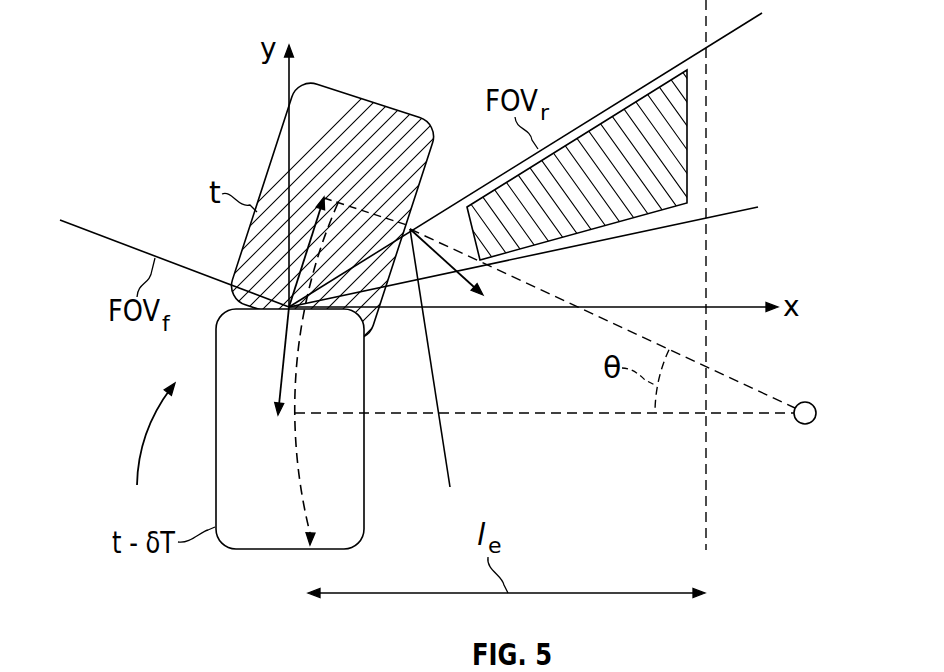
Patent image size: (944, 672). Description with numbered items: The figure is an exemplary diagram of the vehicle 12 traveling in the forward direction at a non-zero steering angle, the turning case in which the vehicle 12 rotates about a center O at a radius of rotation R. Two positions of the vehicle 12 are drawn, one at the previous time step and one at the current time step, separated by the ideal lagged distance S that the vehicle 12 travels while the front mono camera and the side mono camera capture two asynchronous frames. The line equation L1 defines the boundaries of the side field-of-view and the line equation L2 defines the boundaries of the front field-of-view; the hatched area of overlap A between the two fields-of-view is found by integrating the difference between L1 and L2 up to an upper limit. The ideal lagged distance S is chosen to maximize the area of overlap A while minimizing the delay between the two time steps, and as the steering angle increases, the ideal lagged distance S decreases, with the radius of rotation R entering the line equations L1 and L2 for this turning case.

The vehicle 12 is at (367, 158).
The line equation L1 is at (677, 64).
The line equation L2 is at (650, 234).
The area of overlap A is at (590, 204).
The ideal lagged distance S is at (275, 380).
The radius of rotation R is at (523, 413).
The turning center O is at (805, 413).